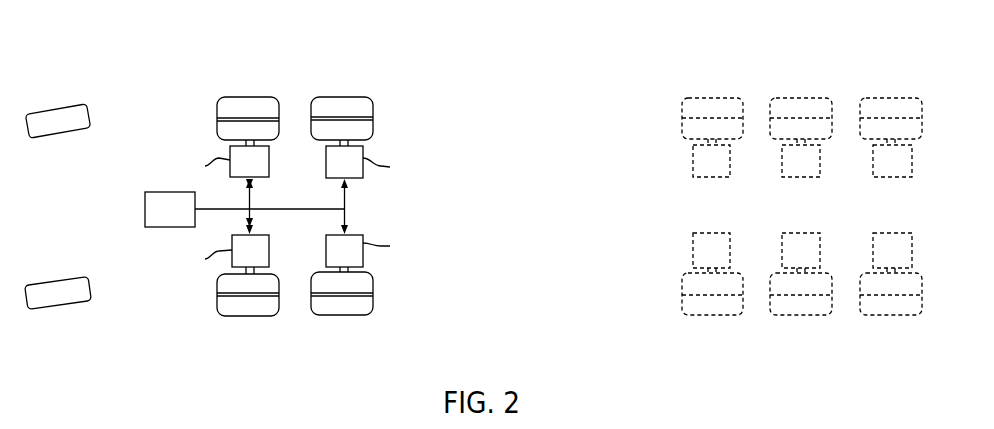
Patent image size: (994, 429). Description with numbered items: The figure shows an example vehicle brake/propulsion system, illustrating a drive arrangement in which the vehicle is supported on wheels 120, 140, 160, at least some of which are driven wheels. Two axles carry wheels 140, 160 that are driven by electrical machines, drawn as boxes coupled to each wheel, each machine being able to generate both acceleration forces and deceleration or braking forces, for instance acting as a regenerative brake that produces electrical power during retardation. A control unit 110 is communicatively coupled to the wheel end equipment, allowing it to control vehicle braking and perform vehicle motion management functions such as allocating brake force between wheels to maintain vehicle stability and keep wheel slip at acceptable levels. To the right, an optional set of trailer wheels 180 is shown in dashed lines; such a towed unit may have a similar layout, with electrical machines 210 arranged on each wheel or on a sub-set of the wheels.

The control unit 110 is at (244, 209).
The wheels 120 is at (93, 82).
The wheels 140 is at (210, 82).
The wheels 160 is at (387, 80).
The trailer wheels 180 is at (652, 80).
The electrical machines 210 is at (693, 162).